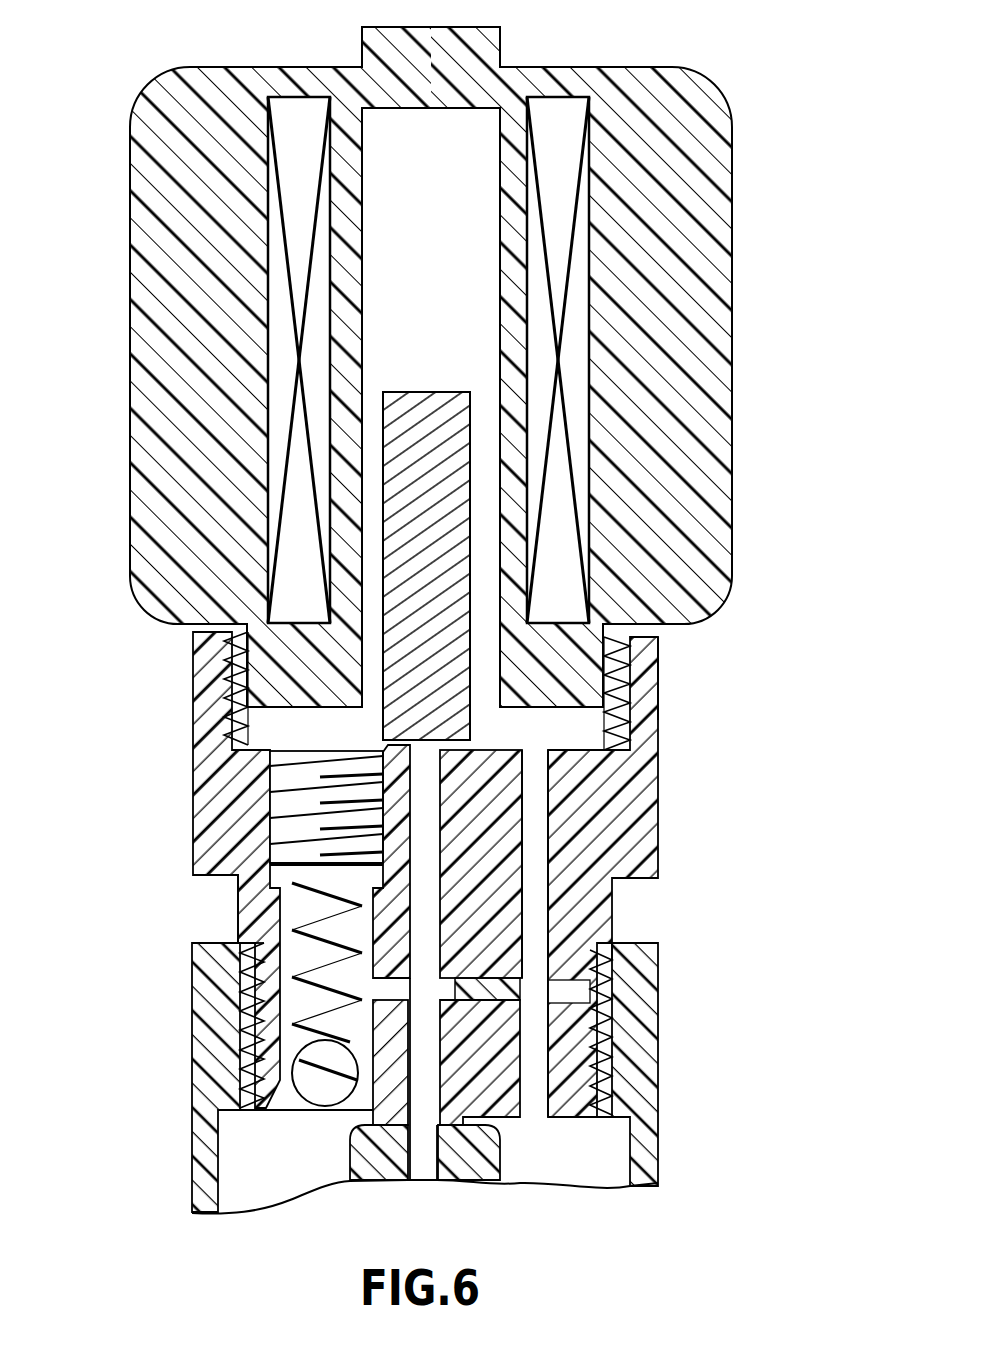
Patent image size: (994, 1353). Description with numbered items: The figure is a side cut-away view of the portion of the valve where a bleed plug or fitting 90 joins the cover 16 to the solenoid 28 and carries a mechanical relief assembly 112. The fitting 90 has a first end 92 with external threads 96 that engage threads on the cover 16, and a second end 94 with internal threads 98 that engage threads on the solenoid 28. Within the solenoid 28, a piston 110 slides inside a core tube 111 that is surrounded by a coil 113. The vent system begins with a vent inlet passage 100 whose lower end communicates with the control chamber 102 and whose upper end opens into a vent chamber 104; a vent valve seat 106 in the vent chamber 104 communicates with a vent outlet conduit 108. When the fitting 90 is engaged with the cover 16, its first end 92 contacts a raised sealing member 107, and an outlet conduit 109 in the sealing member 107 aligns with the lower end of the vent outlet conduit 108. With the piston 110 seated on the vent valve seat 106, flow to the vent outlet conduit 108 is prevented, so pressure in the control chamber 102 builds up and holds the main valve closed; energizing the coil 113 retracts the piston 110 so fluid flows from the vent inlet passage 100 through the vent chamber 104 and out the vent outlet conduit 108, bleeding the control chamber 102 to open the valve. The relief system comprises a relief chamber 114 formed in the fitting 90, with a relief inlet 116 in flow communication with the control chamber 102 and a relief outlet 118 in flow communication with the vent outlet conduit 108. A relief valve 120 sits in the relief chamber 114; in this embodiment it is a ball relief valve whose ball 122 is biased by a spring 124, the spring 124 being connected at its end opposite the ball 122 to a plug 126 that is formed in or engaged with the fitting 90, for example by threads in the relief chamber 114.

The solenoid 28 is at (700, 103).
The core tube 111 is at (498, 298).
The coil 113 is at (570, 350).
The piston 110 is at (473, 483).
The bleed plug or fitting 90 is at (658, 808).
The second end 94 is at (660, 678).
The vent chamber 104 is at (263, 702).
The internal threads 98 is at (592, 716).
The vent valve seat 106 is at (398, 752).
The plug 126 is at (262, 802).
The vent outlet conduit 108 is at (427, 820).
The relief outlet 118 is at (390, 983).
The vent inlet passage 100 is at (540, 898).
The mechanical relief assembly 112 is at (207, 910).
The spring 124 is at (262, 943).
The relief chamber 114 is at (297, 993).
The relief valve 120 is at (228, 1050).
The cover 16 is at (193, 1198).
The first end 92 is at (628, 1060).
The external threads 96 is at (607, 1010).
The relief inlet 116 is at (318, 1127).
The ball 122 is at (318, 1123).
The raised sealing member 107 is at (467, 1180).
The outlet conduit 109 is at (422, 1168).
The control chamber 102 is at (598, 1165).